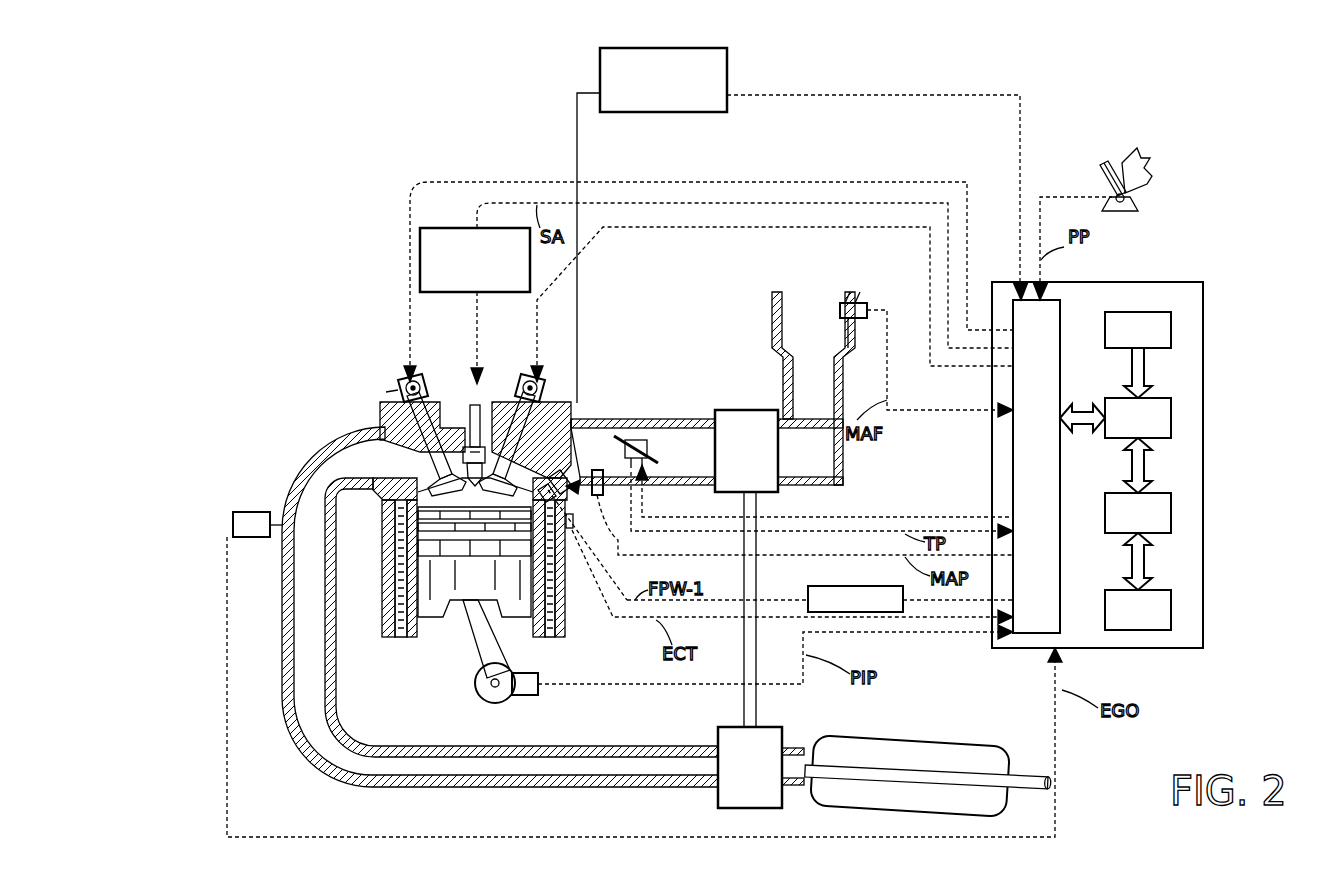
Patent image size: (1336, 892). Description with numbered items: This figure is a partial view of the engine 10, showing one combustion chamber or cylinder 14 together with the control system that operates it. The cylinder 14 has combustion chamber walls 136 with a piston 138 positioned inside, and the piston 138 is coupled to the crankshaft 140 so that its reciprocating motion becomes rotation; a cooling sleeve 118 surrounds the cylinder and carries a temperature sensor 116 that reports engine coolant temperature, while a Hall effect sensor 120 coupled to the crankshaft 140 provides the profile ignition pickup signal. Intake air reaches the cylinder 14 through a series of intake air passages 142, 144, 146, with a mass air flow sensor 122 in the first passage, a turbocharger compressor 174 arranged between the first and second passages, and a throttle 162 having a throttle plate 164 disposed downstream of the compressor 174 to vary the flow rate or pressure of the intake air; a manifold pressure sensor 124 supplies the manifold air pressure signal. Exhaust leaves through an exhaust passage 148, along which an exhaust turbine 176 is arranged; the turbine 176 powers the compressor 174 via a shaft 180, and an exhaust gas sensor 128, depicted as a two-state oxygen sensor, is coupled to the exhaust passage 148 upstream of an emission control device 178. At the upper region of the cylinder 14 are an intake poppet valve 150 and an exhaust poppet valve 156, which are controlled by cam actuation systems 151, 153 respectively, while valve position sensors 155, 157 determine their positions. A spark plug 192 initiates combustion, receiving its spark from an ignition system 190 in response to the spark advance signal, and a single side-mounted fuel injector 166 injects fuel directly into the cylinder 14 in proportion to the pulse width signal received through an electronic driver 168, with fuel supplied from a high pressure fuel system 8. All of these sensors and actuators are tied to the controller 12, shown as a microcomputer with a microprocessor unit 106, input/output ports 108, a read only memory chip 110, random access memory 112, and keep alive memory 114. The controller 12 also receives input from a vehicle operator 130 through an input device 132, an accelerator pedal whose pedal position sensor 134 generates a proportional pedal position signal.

The engine 10 is at (228, 126).
The high pressure fuel system 8 is at (727, 60).
The controller 12 is at (1203, 290).
The cylinder 14 is at (393, 510).
The microprocessor unit 106 is at (1171, 418).
The input/output ports 108 is at (1060, 305).
The read only memory chip 110 is at (1171, 330).
The random access memory 112 is at (1171, 513).
The keep alive memory 114 is at (1171, 610).
The temperature sensor 116 is at (575, 535).
The cooling sleeve 118 is at (550, 590).
The Hall effect sensor 120 is at (528, 697).
The mass air flow sensor 122 is at (862, 303).
The manifold pressure sensor 124 is at (615, 540).
The exhaust gas sensor 128 is at (233, 520).
The vehicle operator 130 is at (1150, 166).
The input device 132 is at (1104, 172).
The pedal position sensor 134 is at (1130, 206).
The combustion chamber walls 136 is at (424, 625).
The piston 138 is at (460, 590).
The crankshaft 140 is at (481, 702).
The intake air passage 142 is at (813, 388).
The intake air passage 144 is at (707, 452).
The intake air passage 146 is at (590, 452).
The exhaust passage 148 is at (500, 607).
The intake poppet valve 150 is at (488, 445).
The cam actuation system 151 is at (522, 378).
The cam actuation system 153 is at (424, 376).
The valve position sensor 155 is at (546, 396).
The exhaust poppet valve 156 is at (438, 474).
The valve position sensor 157 is at (405, 384).
The throttle 162 is at (635, 438).
The throttle plate 164 is at (613, 440).
The fuel injector 166 is at (577, 527).
The electronic driver 168 is at (810, 588).
The compressor 174 is at (733, 410).
The exhaust turbine 176 is at (718, 800).
The emission control device 178 is at (978, 740).
The shaft 180 is at (750, 690).
The ignition system 190 is at (437, 228).
The spark plug 192 is at (473, 433).